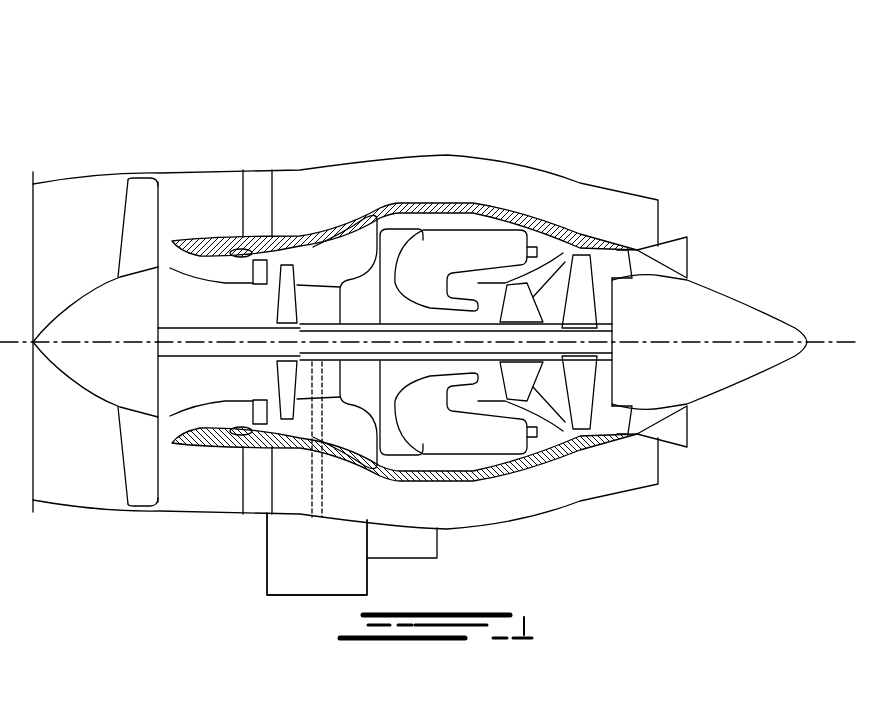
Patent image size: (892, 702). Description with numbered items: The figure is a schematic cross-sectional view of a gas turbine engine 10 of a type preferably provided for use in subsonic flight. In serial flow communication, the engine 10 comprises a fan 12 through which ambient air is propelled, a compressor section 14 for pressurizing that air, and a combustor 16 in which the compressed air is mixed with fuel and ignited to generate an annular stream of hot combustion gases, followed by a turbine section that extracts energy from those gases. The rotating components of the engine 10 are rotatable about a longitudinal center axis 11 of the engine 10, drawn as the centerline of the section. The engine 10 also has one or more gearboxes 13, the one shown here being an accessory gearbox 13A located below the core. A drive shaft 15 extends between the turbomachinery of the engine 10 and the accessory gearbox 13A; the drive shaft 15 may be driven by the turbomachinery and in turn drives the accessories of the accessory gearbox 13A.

The gas turbine engine 10 is at (566, 124).
The longitudinal center axis 11 is at (833, 342).
The fan 12 is at (137, 446).
The gearbox 13 is at (263, 564).
The accessory gearbox 13A is at (286, 578).
The compressor section 14 is at (312, 272).
The drive shaft 15 is at (323, 482).
The combustor 16 is at (460, 243).